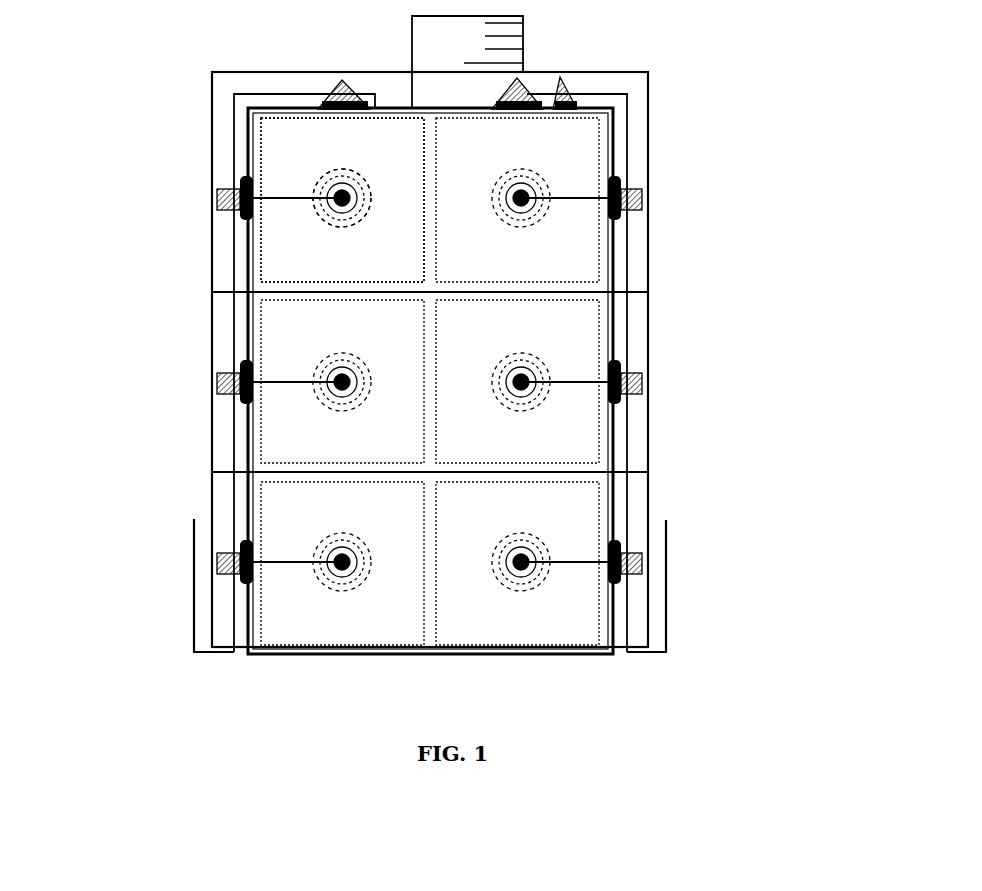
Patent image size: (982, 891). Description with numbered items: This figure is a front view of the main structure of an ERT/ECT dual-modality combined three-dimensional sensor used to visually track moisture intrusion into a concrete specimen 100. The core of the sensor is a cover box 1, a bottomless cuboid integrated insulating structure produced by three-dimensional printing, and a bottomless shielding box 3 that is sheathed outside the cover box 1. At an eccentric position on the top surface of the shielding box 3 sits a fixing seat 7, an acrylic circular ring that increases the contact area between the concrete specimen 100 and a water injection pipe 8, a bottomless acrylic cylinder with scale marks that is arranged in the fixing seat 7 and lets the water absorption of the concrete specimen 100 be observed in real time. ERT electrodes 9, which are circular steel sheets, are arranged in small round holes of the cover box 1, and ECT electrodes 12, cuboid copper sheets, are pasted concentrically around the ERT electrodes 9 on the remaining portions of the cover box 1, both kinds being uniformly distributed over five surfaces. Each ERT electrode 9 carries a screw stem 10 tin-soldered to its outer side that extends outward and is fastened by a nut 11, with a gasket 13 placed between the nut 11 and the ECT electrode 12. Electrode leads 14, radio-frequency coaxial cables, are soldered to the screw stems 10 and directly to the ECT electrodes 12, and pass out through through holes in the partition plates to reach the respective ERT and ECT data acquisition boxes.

The cover box 1 is at (618, 294).
The shielding box 3 is at (651, 390).
The fixing seat 7 is at (542, 112).
The water injection pipe 8 is at (524, 43).
The ERT electrodes 9 is at (322, 177).
The screw stems 10 is at (332, 375).
The nuts 11 is at (533, 396).
The ECT electrodes 12 is at (284, 238).
The gaskets 13 is at (326, 395).
The electrode leads 14 is at (192, 549).
The concrete specimen 100 is at (608, 250).